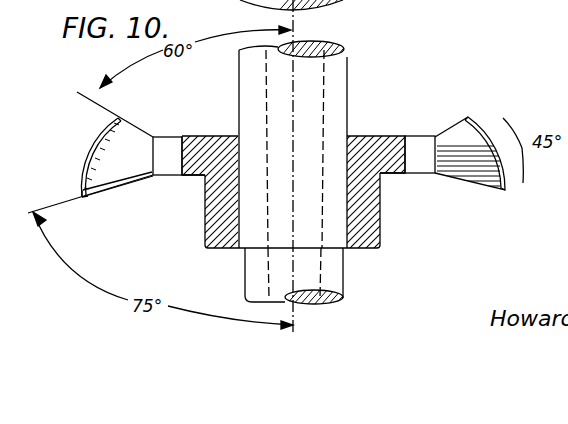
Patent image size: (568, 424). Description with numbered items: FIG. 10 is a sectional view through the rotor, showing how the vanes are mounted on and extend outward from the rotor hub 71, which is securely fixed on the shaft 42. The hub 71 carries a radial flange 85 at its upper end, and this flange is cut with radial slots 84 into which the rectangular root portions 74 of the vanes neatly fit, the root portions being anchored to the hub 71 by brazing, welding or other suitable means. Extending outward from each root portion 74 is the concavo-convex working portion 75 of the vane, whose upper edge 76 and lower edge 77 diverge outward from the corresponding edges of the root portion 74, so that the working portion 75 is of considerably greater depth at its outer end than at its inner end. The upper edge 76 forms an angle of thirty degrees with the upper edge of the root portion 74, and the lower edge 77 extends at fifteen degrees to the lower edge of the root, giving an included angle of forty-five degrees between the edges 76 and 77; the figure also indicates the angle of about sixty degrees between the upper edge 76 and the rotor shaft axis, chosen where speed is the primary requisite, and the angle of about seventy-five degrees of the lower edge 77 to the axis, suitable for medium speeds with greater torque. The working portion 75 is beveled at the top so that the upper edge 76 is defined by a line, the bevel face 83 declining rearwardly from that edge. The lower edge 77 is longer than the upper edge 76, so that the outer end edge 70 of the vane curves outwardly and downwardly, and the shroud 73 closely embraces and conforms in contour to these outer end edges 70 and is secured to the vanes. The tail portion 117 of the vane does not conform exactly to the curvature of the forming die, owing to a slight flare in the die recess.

The shaft 42 is at (345, 64).
The outer end edge of the vane 70 is at (112, 122).
The hub 71 is at (376, 243).
The shroud 73 is at (87, 167).
The root portion 74 is at (172, 143).
The working portion 75 is at (117, 150).
The upper edge of the working portion 76 is at (140, 130).
The lower edge of the working portion 77 is at (121, 187).
The bevel face 83 is at (457, 125).
The radial slots 84 is at (185, 163).
The radial flange 85 is at (380, 147).
The tail portion 117 is at (88, 194).